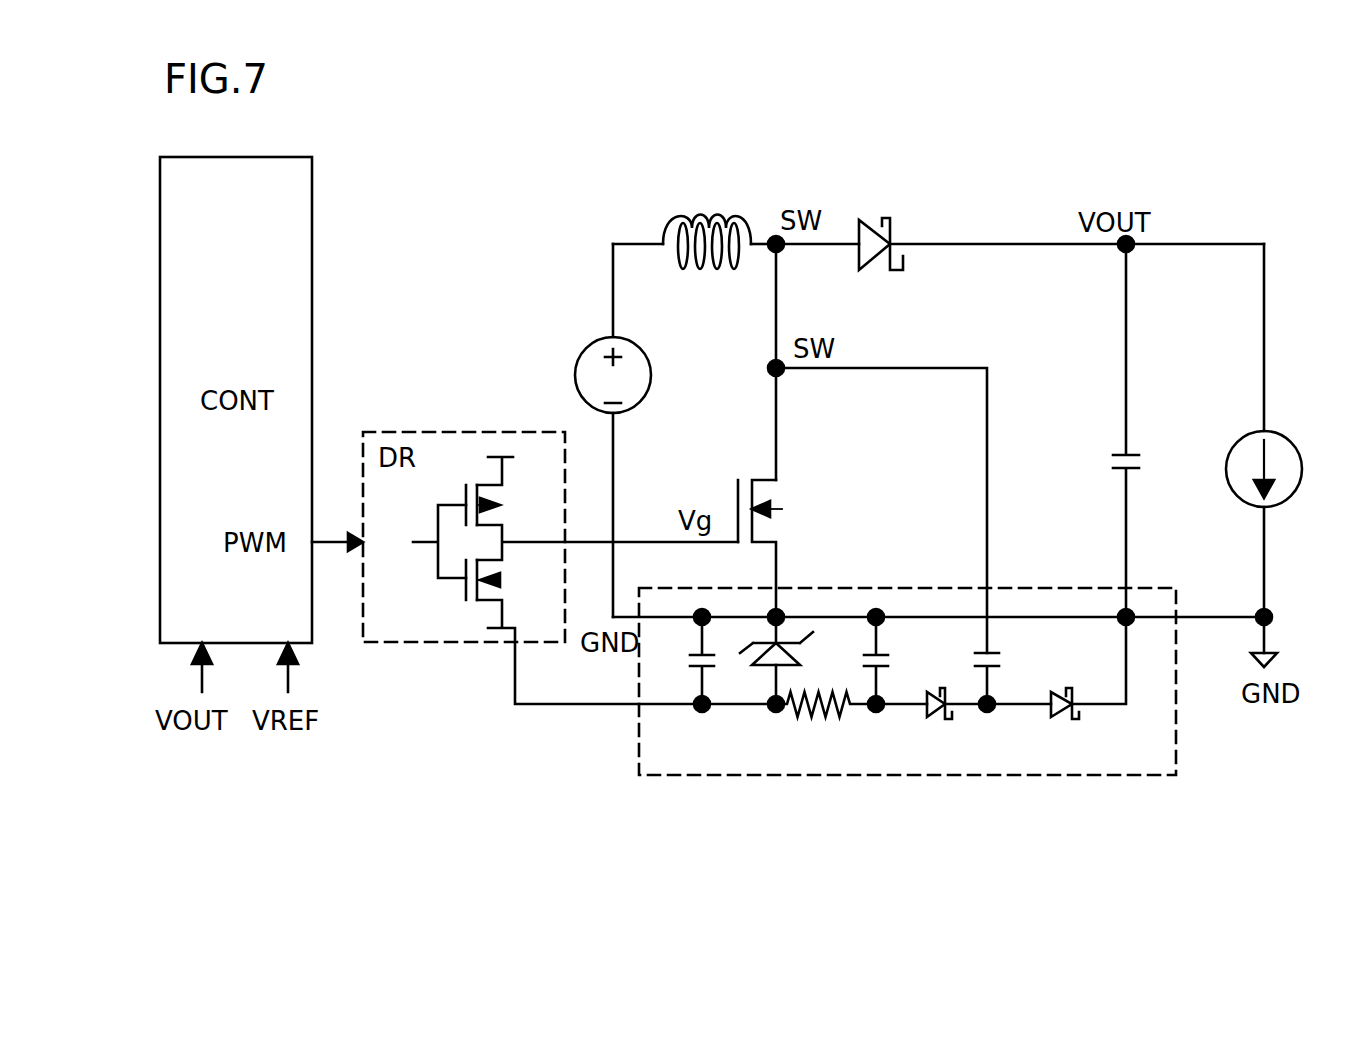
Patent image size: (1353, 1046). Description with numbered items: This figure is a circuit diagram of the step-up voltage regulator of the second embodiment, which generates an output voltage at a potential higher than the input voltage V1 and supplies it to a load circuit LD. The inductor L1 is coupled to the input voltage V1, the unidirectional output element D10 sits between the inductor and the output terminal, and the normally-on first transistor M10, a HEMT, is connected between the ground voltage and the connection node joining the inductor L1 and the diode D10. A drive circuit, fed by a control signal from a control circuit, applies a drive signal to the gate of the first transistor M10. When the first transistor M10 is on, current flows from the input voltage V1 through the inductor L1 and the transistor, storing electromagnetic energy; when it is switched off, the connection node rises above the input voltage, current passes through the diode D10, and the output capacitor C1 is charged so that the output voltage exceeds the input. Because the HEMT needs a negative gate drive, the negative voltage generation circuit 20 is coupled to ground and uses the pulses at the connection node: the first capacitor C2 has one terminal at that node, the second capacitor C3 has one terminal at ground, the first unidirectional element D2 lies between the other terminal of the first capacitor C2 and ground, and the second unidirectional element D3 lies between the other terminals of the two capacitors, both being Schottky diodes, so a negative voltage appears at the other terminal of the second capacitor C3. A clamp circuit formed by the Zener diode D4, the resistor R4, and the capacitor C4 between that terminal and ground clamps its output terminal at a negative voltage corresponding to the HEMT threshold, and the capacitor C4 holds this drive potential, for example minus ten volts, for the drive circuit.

The negative voltage generation circuit 20 is at (937, 691).
The input voltage V1 is at (590, 430).
The inductor L1 is at (694, 225).
The unidirectional output element D10 is at (1020, 225).
The first transistor M10 is at (793, 548).
The output capacitor C1 is at (1150, 430).
The load circuit LD is at (1288, 448).
The capacitor C4 is at (685, 660).
The Zener diode D4 is at (797, 660).
The second capacitor C3 is at (894, 660).
The first capacitor C2 is at (1006, 675).
The resistor R4 is at (814, 725).
The second unidirectional element D3 is at (957, 723).
The first unidirectional element D2 is at (1056, 688).